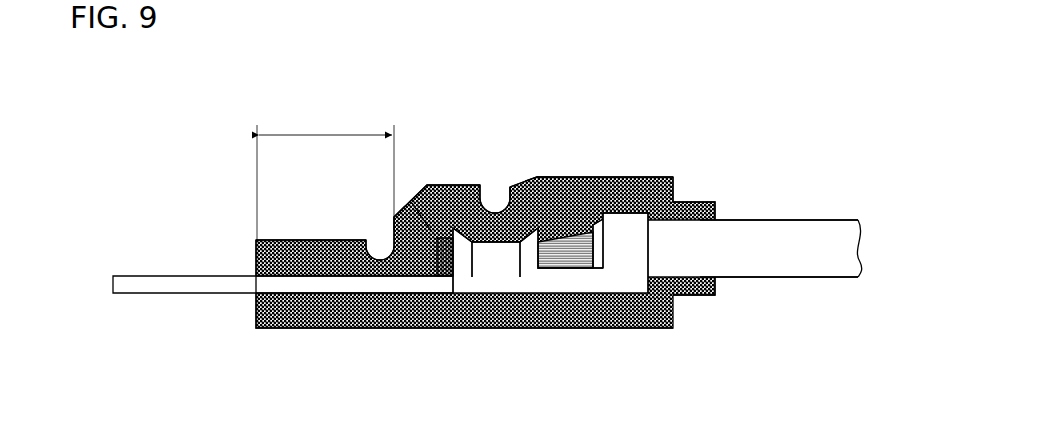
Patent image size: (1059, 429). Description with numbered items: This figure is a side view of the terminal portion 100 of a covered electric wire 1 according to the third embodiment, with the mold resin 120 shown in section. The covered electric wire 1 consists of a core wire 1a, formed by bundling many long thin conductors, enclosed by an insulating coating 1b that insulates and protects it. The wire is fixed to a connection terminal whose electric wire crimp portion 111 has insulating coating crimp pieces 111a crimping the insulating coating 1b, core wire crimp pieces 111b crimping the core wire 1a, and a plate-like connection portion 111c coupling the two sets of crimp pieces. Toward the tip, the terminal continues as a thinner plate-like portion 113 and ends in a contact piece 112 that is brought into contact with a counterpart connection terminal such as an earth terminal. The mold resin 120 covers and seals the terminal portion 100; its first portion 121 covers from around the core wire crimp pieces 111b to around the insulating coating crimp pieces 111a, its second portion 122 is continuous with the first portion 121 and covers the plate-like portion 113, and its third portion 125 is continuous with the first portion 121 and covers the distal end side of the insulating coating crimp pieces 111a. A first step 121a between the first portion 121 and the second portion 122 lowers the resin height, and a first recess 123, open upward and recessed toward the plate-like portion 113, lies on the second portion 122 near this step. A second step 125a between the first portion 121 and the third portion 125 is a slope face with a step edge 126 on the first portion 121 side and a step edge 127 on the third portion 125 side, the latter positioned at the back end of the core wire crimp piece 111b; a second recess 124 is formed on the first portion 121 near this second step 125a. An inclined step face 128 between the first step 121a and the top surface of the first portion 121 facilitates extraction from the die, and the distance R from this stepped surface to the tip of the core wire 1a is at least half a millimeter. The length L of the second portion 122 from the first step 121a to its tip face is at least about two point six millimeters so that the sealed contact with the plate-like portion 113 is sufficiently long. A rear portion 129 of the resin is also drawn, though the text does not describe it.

The terminal portion 100 is at (281, 114).
The covered electric wire 1 is at (794, 217).
The core wire 1a is at (574, 240).
The insulating coating 1b is at (795, 262).
The electric wire crimp portion 111 is at (662, 383).
The insulating coating crimp pieces 111a is at (628, 252).
The core wire crimp pieces 111b is at (496, 260).
The plate-like connection portion 111c is at (564, 279).
The contact piece 112 is at (157, 283).
The plate-like portion 113 is at (367, 284).
The mold resin 120 is at (692, 340).
The first portion 121 is at (458, 185).
The first step 121a is at (386, 214).
The second portion 122 is at (298, 240).
The first recess 123 is at (378, 258).
The second recess 124 is at (492, 205).
The third portion 125 is at (620, 177).
The second step 125a is at (528, 176).
The step edge 126 is at (508, 186).
The step edge 127 is at (540, 177).
The step face 128 is at (432, 232).
The rear step portion 129 is at (697, 200).
The length L is at (325, 177).
The distance R is at (436, 228).